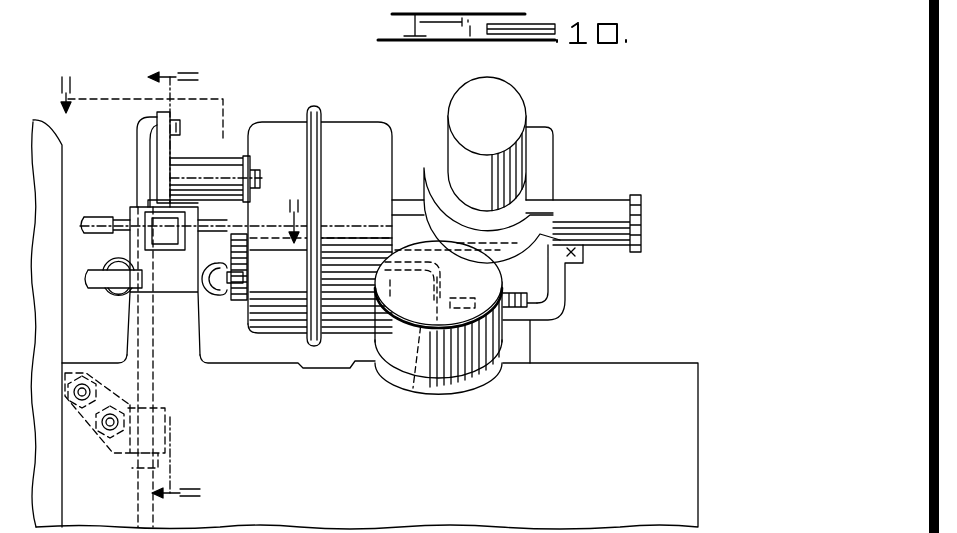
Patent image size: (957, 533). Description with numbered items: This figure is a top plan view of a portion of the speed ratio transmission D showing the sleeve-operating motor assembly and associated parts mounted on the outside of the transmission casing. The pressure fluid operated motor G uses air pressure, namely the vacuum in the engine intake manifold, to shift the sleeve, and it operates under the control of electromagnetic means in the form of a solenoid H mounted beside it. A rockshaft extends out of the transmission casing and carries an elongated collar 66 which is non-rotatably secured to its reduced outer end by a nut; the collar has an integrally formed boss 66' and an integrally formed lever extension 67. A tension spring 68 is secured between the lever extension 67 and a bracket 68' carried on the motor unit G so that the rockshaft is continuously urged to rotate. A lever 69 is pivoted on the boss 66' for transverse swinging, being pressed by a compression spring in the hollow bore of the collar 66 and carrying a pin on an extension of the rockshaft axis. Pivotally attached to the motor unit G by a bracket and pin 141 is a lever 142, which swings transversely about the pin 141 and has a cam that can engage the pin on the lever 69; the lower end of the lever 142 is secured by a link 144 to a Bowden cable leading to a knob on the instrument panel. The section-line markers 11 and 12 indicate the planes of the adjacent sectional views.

The collar 66 is at (180, 279).
The boss 66' is at (131, 190).
The lever extension 67 is at (90, 288).
The tension spring 68 is at (106, 267).
The bracket 68' is at (244, 279).
The lever 69 is at (112, 220).
The pin 141 is at (253, 170).
The lever 142 is at (172, 150).
The link 144 is at (140, 147).
The pressure fluid operated motor G is at (352, 122).
The solenoid H is at (518, 108).
The speed ratio transmission D is at (608, 364).
The section line 11 is at (156, 297).
The section line 12 is at (181, 172).